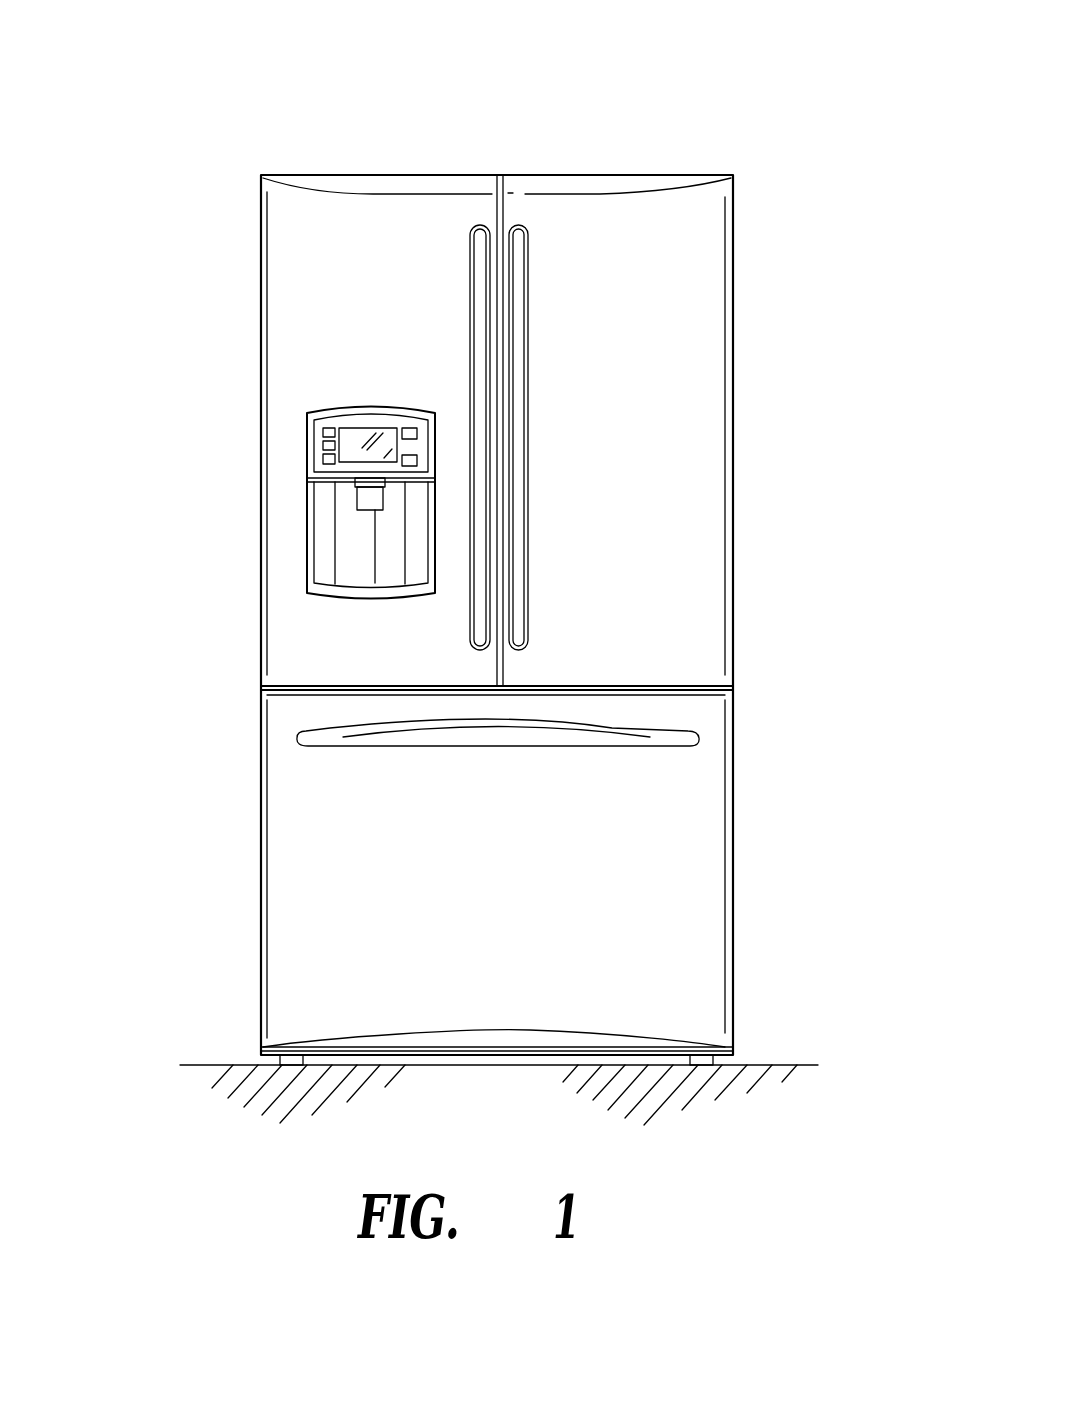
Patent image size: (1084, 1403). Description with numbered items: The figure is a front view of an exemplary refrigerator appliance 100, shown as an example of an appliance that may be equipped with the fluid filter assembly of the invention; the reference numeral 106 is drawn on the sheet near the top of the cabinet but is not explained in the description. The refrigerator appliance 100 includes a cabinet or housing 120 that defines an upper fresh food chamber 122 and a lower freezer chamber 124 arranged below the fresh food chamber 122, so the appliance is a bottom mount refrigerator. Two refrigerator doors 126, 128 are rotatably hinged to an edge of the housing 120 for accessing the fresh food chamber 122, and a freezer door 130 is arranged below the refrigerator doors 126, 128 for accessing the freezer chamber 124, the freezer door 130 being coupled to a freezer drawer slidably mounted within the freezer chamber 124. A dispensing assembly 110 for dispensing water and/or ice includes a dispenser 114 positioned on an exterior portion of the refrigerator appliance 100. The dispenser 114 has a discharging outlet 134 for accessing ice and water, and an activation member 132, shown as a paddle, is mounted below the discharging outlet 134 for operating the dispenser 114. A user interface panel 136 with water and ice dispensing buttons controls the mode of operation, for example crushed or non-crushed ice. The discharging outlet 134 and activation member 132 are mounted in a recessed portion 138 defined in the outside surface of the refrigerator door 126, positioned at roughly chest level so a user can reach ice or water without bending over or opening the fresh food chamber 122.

The refrigerator appliance 100 is at (719, 88).
The cabinet 106 is at (743, 176).
The dispensing assembly 110 is at (325, 393).
The dispenser 114 is at (365, 542).
The housing 120 is at (262, 885).
The fresh food chamber 122 is at (692, 437).
The freezer chamber 124 is at (692, 818).
The refrigerator door 126 is at (290, 272).
The refrigerator door 128 is at (708, 314).
The freezer door 130 is at (700, 930).
The activation member 132 is at (368, 492).
The discharging outlet 134 is at (360, 505).
The user interface panel 136 is at (322, 444).
The recessed portion 138 is at (388, 560).